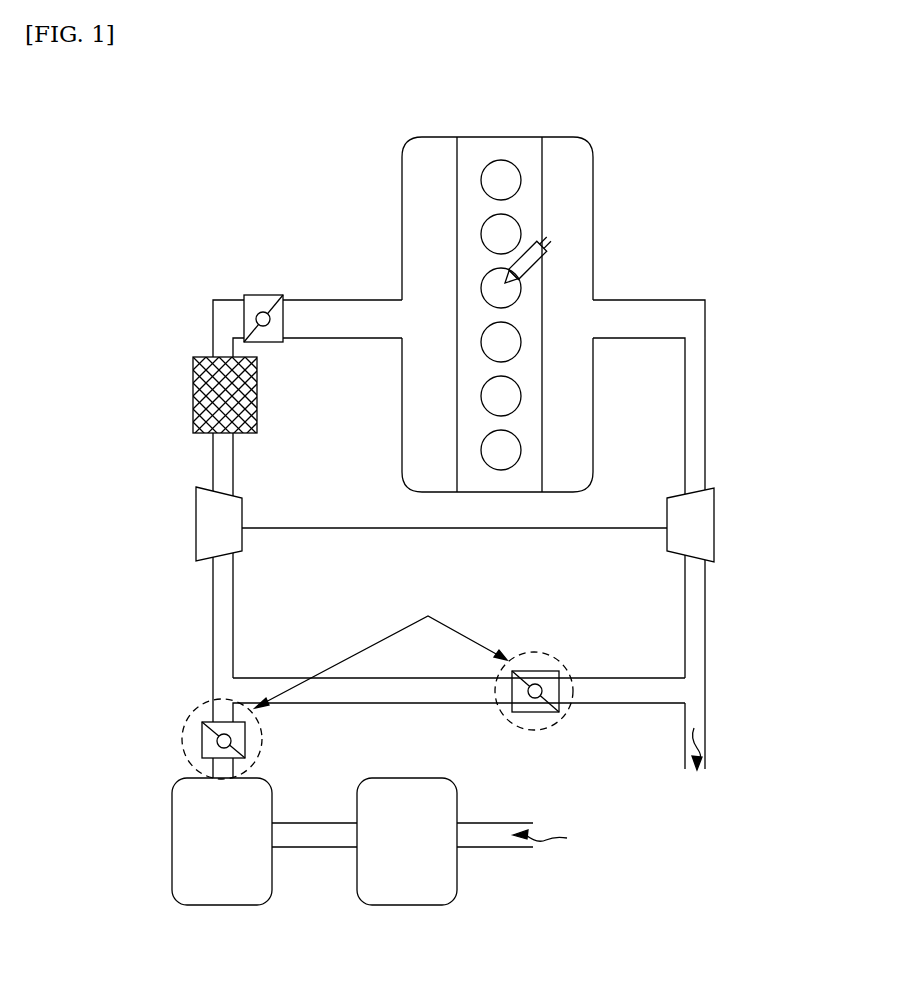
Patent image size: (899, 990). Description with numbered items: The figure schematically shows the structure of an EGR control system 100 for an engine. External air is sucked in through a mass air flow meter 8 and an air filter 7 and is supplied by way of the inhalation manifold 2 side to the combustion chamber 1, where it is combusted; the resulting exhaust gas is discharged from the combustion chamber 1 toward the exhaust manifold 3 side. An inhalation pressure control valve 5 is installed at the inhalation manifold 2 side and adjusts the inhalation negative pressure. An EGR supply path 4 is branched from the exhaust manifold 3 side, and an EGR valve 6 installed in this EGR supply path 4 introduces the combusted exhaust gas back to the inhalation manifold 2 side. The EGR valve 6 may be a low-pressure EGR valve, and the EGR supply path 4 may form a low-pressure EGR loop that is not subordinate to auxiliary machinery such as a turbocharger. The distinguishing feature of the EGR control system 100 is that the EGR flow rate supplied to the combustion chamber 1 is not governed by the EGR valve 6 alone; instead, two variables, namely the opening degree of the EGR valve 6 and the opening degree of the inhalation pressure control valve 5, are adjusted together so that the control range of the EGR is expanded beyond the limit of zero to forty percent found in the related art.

The EGR control system 100 is at (218, 111).
The combustion chamber 1 is at (530, 197).
The inhalation manifold 2 is at (417, 253).
The exhaust manifold 3 is at (580, 258).
The EGR supply path 4 is at (627, 690).
The inhalation pressure control valve 5 is at (215, 743).
The EGR valve 6 is at (535, 688).
The air filter 7 is at (219, 890).
The mass air flow meter 8 is at (411, 892).